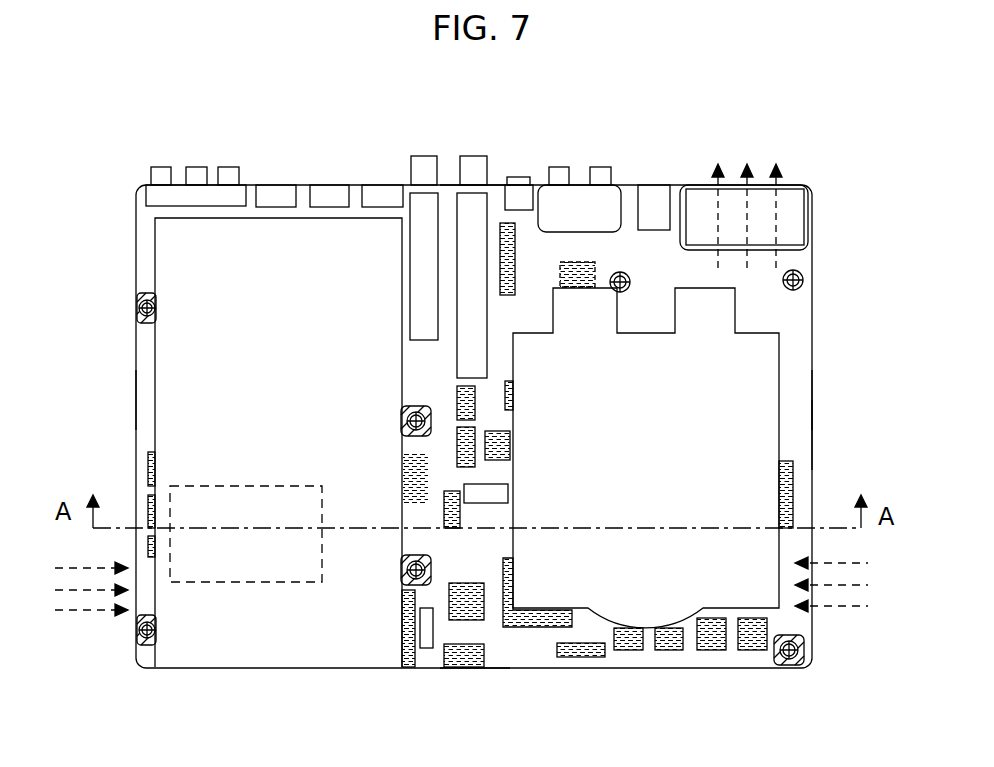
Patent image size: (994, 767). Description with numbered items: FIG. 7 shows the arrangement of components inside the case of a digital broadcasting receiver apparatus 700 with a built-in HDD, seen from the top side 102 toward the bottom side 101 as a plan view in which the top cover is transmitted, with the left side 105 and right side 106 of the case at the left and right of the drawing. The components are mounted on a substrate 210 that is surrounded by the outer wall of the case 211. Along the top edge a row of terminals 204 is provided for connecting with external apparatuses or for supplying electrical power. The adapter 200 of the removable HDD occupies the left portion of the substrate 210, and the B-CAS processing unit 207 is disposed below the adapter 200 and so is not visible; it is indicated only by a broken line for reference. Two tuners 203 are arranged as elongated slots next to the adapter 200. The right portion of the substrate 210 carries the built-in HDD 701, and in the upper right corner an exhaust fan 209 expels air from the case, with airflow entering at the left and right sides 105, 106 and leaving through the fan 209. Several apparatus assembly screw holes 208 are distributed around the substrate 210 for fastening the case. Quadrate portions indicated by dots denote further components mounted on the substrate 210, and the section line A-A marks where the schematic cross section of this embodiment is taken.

The printed circuit board assembly 700 is at (822, 110).
The bottom side direction 101 is at (480, 697).
The top side direction 102 is at (480, 128).
The left side direction 105 is at (120, 403).
The right side direction 106 is at (832, 403).
The adapter of the removable HDD 200 is at (293, 660).
The tuner 203 is at (418, 322).
The terminals 204 is at (184, 190).
The B-CAS processing unit 207 is at (215, 573).
The apparatus assembly screw hole 208 is at (135, 310).
The exhaust fan 209 is at (795, 218).
The substrate 210 is at (788, 314).
The outer wall of the case 211 is at (812, 433).
The built-in HDD 701 is at (748, 460).